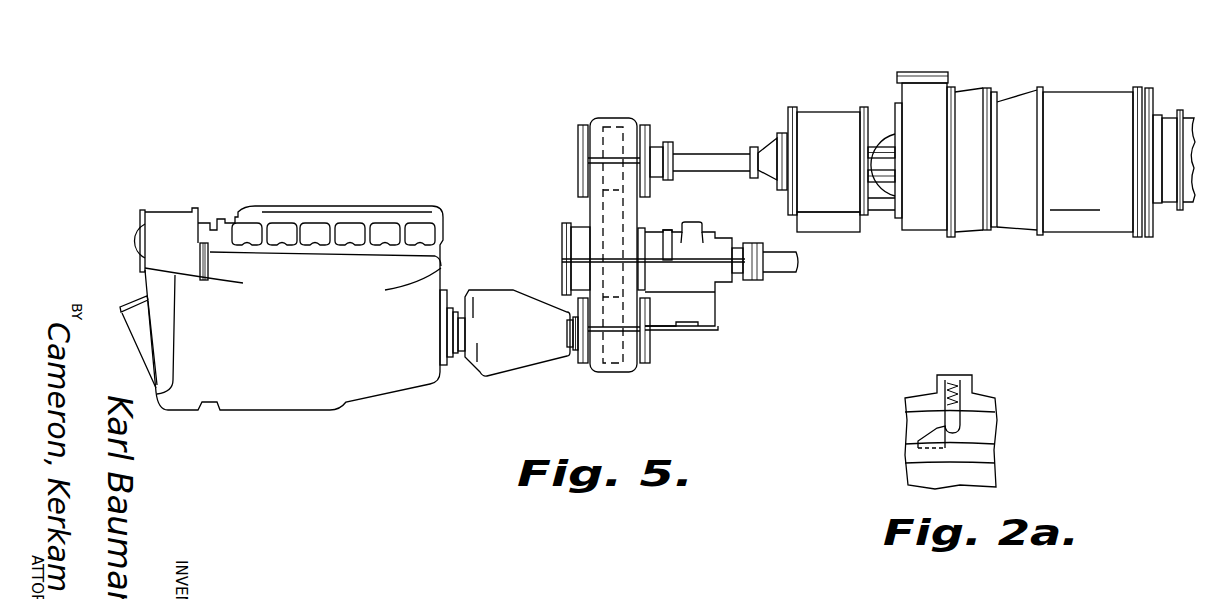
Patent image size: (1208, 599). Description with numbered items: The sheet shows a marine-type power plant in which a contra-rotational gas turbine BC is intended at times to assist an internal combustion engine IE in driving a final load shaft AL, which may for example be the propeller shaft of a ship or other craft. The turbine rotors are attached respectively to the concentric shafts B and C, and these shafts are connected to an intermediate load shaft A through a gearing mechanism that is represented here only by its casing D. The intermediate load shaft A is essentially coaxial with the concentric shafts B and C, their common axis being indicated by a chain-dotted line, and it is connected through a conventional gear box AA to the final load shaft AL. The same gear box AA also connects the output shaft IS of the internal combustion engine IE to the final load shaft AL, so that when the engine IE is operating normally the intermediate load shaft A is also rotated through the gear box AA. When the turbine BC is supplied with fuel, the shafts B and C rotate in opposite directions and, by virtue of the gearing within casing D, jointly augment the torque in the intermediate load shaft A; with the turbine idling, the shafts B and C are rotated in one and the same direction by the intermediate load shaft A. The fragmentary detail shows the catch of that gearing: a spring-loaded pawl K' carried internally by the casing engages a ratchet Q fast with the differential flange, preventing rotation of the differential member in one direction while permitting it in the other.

In FIG. 5, the internal combustion engine IE is at (299, 353).
In FIG. 5, the output shaft IS is at (573, 351).
In FIG. 5, the gear box AA is at (590, 207).
In FIG. 5, the intermediate load shaft A is at (735, 169).
In FIG. 5, the final load shaft AL is at (782, 268).
In FIG. 5, the casing D is at (823, 112).
In FIG. 5, the concentric shaft C is at (880, 133).
In FIG. 5, the concentric shaft B is at (890, 153).
In FIG. 5, the contra-rotational gas turbine BC is at (1098, 179).
In FIG. 2A, the spring-loaded pawl K' is at (988, 421).
In FIG. 2A, the ratchet Q is at (937, 431).